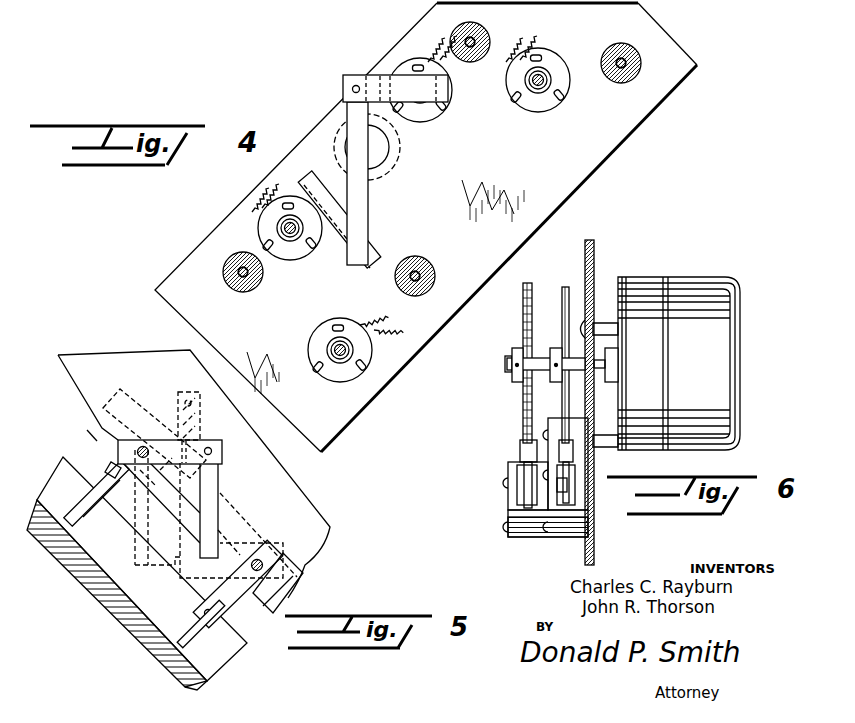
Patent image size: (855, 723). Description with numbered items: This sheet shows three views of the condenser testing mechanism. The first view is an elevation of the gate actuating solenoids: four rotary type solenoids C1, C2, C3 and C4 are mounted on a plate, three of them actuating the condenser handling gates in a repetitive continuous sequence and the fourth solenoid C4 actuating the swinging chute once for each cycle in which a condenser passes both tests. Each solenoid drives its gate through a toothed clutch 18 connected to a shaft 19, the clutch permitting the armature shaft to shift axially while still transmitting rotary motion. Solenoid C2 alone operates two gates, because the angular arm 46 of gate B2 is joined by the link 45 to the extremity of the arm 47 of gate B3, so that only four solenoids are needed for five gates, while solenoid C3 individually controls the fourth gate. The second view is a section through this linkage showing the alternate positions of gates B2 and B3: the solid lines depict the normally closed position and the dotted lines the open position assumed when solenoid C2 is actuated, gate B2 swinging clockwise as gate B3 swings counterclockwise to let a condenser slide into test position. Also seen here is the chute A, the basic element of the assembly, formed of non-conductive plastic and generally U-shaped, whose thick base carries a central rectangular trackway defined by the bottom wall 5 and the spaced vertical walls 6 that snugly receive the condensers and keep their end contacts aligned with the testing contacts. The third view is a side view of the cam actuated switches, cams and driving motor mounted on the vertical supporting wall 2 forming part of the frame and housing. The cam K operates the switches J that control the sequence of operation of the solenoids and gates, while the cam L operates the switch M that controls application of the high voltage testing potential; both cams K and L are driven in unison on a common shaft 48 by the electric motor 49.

In FIG. 6, the vertical supporting wall 2 is at (594, 256).
In FIG. 5, the bottom wall 5 is at (100, 604).
In FIG. 5, the vertical walls 6 is at (233, 647).
In FIG. 4, the toothed clutch 18 is at (545, 62).
In FIG. 4, the shaft 19 is at (546, 80).
In FIG. 5, the shaft 19 is at (143, 447).
In FIG. 4, the link 45 is at (370, 206).
In FIG. 5, the link 45 is at (220, 484).
In FIG. 4, the angular arm 46 is at (385, 76).
In FIG. 5, the angular arm 46 is at (166, 440).
In FIG. 4, the arm 47 is at (340, 255).
In FIG. 5, the arm 47 is at (303, 579).
In FIG. 6, the common shaft 48 is at (538, 358).
In FIG. 6, the electric motor 49 is at (715, 279).
In FIG. 5, the chute A is at (213, 669).
In FIG. 5, the gate B2 is at (96, 482).
In FIG. 5, the gate B3 is at (233, 603).
In FIG. 4, the rotary solenoid C1 is at (543, 110).
In FIG. 4, the rotary solenoid C2 is at (432, 120).
In FIG. 4, the rotary solenoid C3 is at (290, 258).
In FIG. 4, the rotary solenoid C4 is at (329, 381).
In FIG. 6, the switch J is at (566, 482).
In FIG. 6, the cam K is at (565, 286).
In FIG. 6, the cam L is at (528, 283).
In FIG. 6, the switch M is at (525, 490).